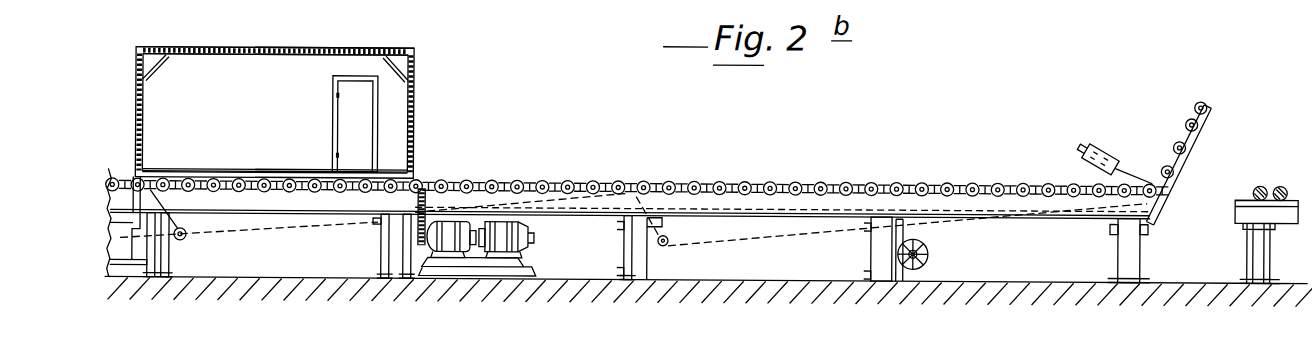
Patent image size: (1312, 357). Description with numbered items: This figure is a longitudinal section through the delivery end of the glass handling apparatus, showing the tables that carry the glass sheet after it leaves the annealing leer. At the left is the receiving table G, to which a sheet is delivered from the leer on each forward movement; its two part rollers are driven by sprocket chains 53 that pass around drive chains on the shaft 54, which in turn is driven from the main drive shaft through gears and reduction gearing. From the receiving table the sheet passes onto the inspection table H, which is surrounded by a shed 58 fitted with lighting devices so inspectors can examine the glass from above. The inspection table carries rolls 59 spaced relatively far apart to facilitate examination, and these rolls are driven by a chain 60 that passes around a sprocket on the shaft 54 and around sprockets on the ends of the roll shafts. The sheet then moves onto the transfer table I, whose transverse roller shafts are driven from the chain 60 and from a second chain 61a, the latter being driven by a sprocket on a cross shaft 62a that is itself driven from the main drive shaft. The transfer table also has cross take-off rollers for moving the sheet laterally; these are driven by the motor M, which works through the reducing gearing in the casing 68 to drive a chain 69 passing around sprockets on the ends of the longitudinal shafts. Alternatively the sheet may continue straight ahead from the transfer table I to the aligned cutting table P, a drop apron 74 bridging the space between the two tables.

The shed 58 is at (253, 40).
The receiving table G is at (123, 174).
The inspection table H is at (230, 164).
The rolls 59 is at (313, 181).
The transfer table I is at (626, 175).
The drop apron 74 is at (1168, 152).
The cutting table P is at (1271, 185).
The sprocket chains 53 is at (128, 243).
The shaft 54 is at (181, 243).
The chain 60 is at (273, 239).
The chain 69 is at (416, 225).
The casing 68 is at (450, 246).
The motor M is at (507, 242).
The cross shaft 62a is at (665, 249).
The chain 61a is at (827, 234).